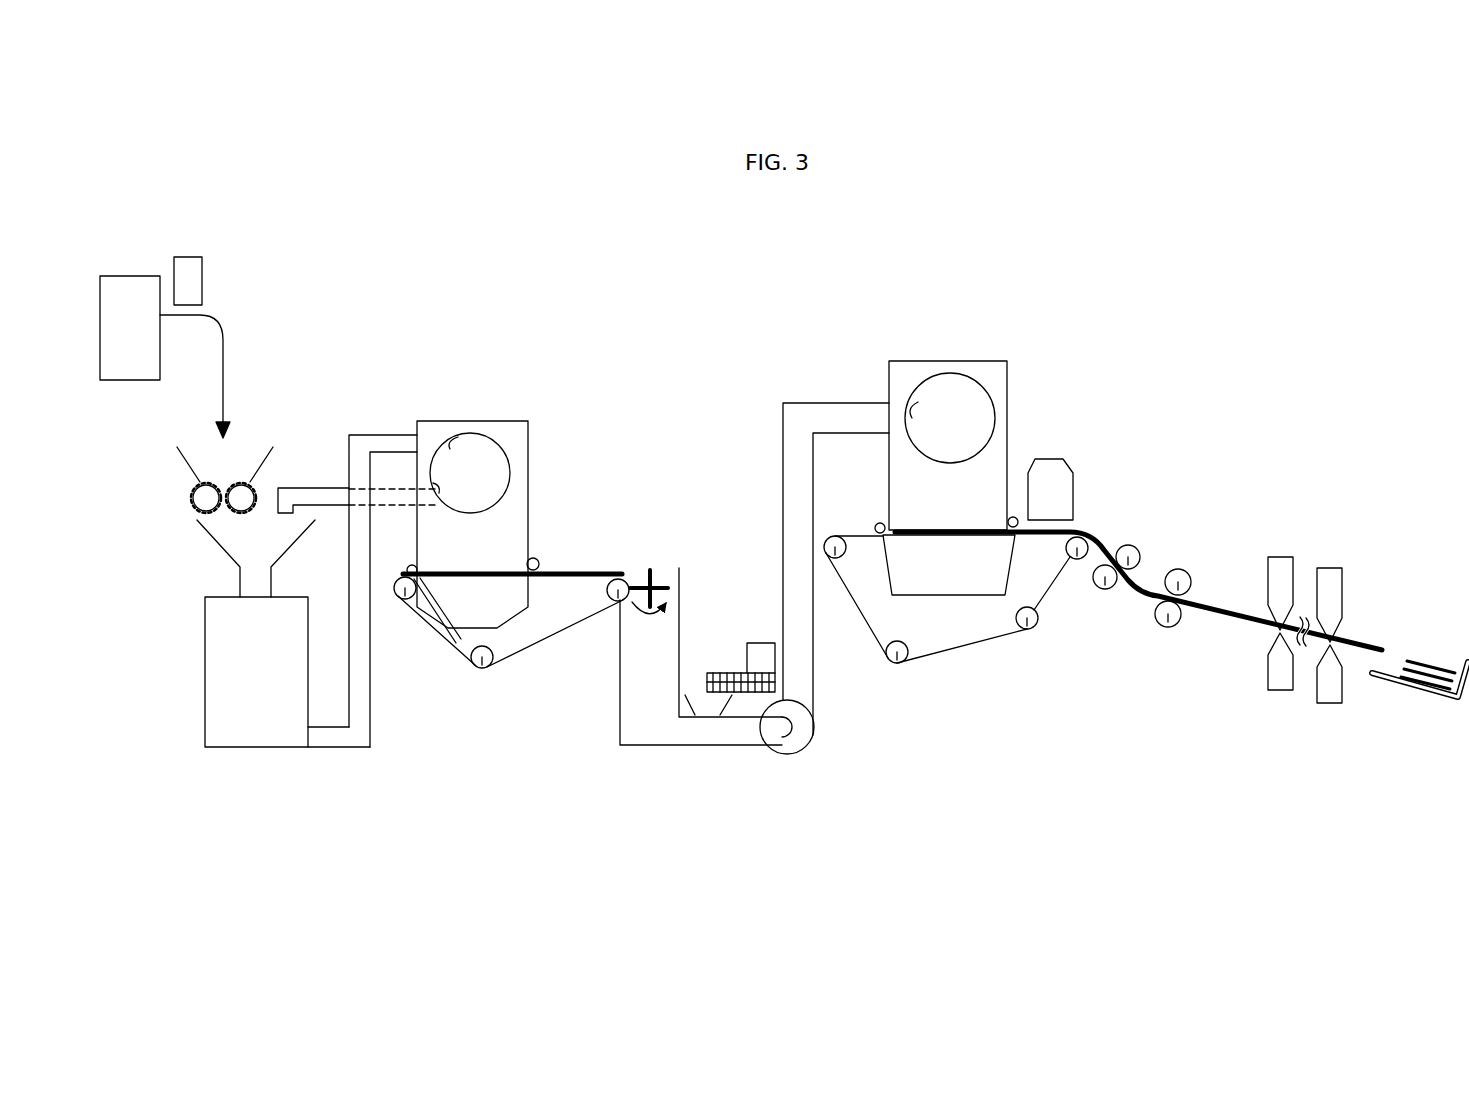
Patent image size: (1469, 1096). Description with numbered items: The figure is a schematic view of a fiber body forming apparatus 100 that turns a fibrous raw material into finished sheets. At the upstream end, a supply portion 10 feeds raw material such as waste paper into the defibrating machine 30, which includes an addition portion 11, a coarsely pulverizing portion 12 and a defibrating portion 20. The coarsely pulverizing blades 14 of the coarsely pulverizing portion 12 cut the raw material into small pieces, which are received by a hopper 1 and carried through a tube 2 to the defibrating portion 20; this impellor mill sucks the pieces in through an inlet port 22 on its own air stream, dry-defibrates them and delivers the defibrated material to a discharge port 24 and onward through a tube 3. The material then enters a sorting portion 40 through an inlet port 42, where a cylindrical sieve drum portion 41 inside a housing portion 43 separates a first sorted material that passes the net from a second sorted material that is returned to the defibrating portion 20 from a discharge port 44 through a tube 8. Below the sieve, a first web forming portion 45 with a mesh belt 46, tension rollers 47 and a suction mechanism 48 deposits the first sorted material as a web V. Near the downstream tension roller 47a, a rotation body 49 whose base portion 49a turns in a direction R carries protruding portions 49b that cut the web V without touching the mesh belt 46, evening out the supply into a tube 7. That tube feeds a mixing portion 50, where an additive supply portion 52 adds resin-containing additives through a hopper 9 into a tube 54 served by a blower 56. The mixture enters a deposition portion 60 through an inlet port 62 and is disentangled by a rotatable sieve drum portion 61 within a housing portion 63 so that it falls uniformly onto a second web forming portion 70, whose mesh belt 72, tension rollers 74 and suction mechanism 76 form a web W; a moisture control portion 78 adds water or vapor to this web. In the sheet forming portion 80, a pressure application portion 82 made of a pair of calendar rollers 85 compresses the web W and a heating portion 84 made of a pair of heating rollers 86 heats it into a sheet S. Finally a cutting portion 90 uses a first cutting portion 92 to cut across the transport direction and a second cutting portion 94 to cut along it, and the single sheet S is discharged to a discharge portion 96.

The hopper 1 is at (213, 540).
The tube 2 is at (236, 557).
The tube 3 is at (357, 585).
The tube 7 is at (665, 662).
The tube 8 is at (328, 497).
The hopper 9 is at (680, 705).
The supply portion 10 is at (134, 262).
The addition portion 11 is at (192, 285).
The coarsely pulverizing portion 12 is at (186, 466).
The coarsely pulverizing blades 14 is at (207, 498).
The defibrating portion 20 is at (255, 665).
The inlet port 22 is at (255, 600).
The discharge port 24 is at (300, 730).
The defibrating machine 30 is at (357, 433).
The sorting portion 40 is at (499, 495).
The drum portion 41 is at (512, 473).
The inlet port 42 is at (450, 444).
The housing portion 43 is at (530, 448).
The discharge port 44 is at (437, 490).
The first web forming portion 45 is at (505, 618).
The mesh belt 46 is at (530, 646).
The tension rollers 47 is at (404, 598).
The tension roller 47a is at (616, 604).
The suction mechanism 48 is at (463, 616).
The rotation body 49 is at (665, 547).
The base portion 49a is at (655, 588).
The protruding portions 49b is at (642, 563).
The mixing portion 50 is at (737, 608).
The additive supply portion 52 is at (763, 650).
The tube 54 is at (727, 730).
The blower 56 is at (797, 747).
The deposition portion 60 is at (995, 416).
The drum portion 61 is at (995, 410).
The inlet port 62 is at (918, 400).
The housing portion 63 is at (1009, 382).
The second web forming portion 70 is at (955, 602).
The mesh belt 72 is at (877, 526).
The tension rollers 74 is at (836, 560).
The suction mechanism 76 is at (943, 570).
The moisture control portion 78 is at (1047, 480).
The sheet forming portion 80 is at (1174, 574).
The pressure application portion 82 is at (1143, 568).
The heating portion 84 is at (1199, 602).
The calendar rollers 85 is at (1128, 547).
The heating rollers 86 is at (1176, 570).
The cutting portion 90 is at (1328, 586).
The first cutting portion 92 is at (1282, 545).
The second cutting portion 94 is at (1347, 609).
The discharge portion 96 is at (1447, 700).
The fiber body forming apparatus 100 is at (1132, 288).
The web V is at (576, 567).
The web W is at (1097, 525).
The direction R is at (682, 615).
The sheet S is at (1240, 607).